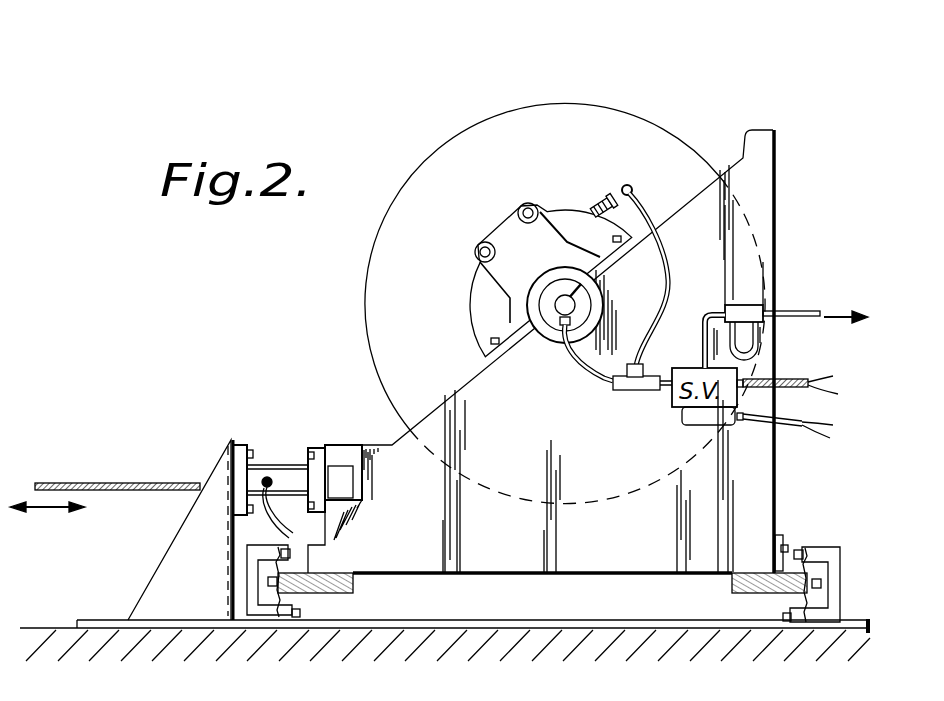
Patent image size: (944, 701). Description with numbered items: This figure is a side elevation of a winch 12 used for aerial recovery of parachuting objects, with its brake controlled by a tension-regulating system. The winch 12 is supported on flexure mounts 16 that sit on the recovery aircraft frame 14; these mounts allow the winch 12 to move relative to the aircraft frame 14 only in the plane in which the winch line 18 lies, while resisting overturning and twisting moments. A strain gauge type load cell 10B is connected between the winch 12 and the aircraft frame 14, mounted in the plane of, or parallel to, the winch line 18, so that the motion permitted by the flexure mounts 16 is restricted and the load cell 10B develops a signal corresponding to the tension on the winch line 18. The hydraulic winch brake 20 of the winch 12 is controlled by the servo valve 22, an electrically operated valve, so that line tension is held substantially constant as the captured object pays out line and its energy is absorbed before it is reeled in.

The load cell 10B is at (280, 473).
The winch 12 is at (773, 130).
The recovery aircraft frame 14 is at (64, 647).
The flexure mounts 16 is at (278, 592).
The winch line 18 is at (143, 486).
The hydraulic winch brake 20 is at (526, 312).
The servo valve 22 is at (729, 377).